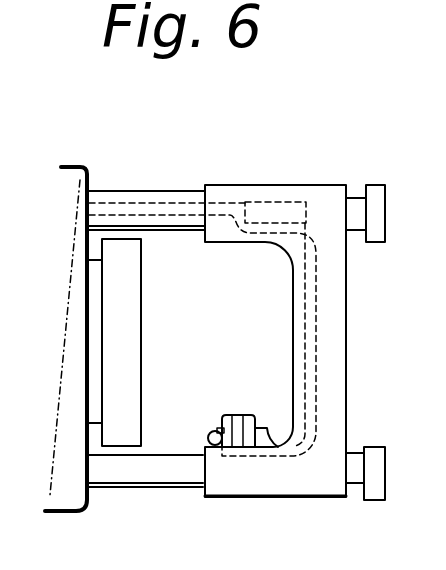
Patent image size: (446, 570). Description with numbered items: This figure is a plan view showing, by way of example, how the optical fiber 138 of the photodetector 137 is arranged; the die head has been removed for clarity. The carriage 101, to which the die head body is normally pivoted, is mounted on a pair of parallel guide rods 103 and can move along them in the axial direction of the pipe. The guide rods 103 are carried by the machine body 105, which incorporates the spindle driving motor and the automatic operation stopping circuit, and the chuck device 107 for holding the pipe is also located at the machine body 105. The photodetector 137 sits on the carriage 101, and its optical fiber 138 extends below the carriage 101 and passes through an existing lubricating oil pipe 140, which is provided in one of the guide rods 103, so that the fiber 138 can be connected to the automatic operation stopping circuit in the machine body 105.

The carriage 101 is at (330, 490).
The guide rods 103 is at (175, 192).
The machine body 105 is at (72, 170).
The chuck device 107 is at (140, 307).
The photodetector 137 is at (217, 430).
The optical fiber 138 is at (317, 376).
The lubricating oil pipe 140 is at (233, 205).